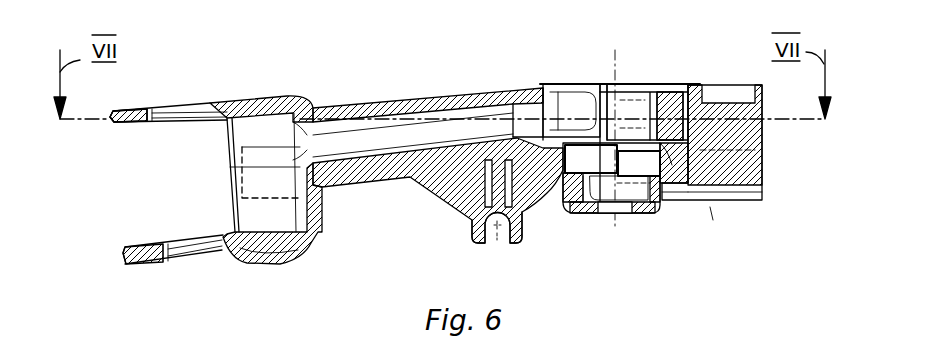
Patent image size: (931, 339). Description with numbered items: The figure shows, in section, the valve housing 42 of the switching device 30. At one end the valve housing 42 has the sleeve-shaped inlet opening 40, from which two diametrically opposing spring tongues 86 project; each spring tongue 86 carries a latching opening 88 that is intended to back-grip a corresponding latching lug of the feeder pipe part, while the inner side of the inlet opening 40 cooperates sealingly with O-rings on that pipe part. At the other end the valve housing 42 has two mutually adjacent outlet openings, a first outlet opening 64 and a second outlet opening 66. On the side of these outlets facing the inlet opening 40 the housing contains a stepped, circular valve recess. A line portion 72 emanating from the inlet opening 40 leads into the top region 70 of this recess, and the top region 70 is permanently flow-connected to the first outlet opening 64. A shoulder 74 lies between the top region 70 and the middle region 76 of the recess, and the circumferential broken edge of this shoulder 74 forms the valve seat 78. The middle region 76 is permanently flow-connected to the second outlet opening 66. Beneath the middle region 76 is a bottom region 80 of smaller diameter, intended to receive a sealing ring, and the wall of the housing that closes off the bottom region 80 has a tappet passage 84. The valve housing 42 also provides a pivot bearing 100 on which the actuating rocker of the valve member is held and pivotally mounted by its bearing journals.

The switching device 30 is at (343, 80).
The sleeve-shaped inlet opening 40 is at (267, 127).
The valve housing 42 is at (368, 187).
The first outlet opening 64 is at (727, 110).
The second outlet opening 66 is at (660, 198).
The top region 70 is at (643, 106).
The line portion 72 is at (398, 137).
The shoulder 74 is at (565, 97).
The middle region 76 is at (580, 162).
The valve seat 78 is at (602, 95).
The bottom region 80 is at (588, 190).
The tappet passage 84 is at (622, 205).
The spring tongues 86 is at (128, 132).
The latching opening 88 is at (192, 78).
The pivot bearing 100 is at (483, 242).